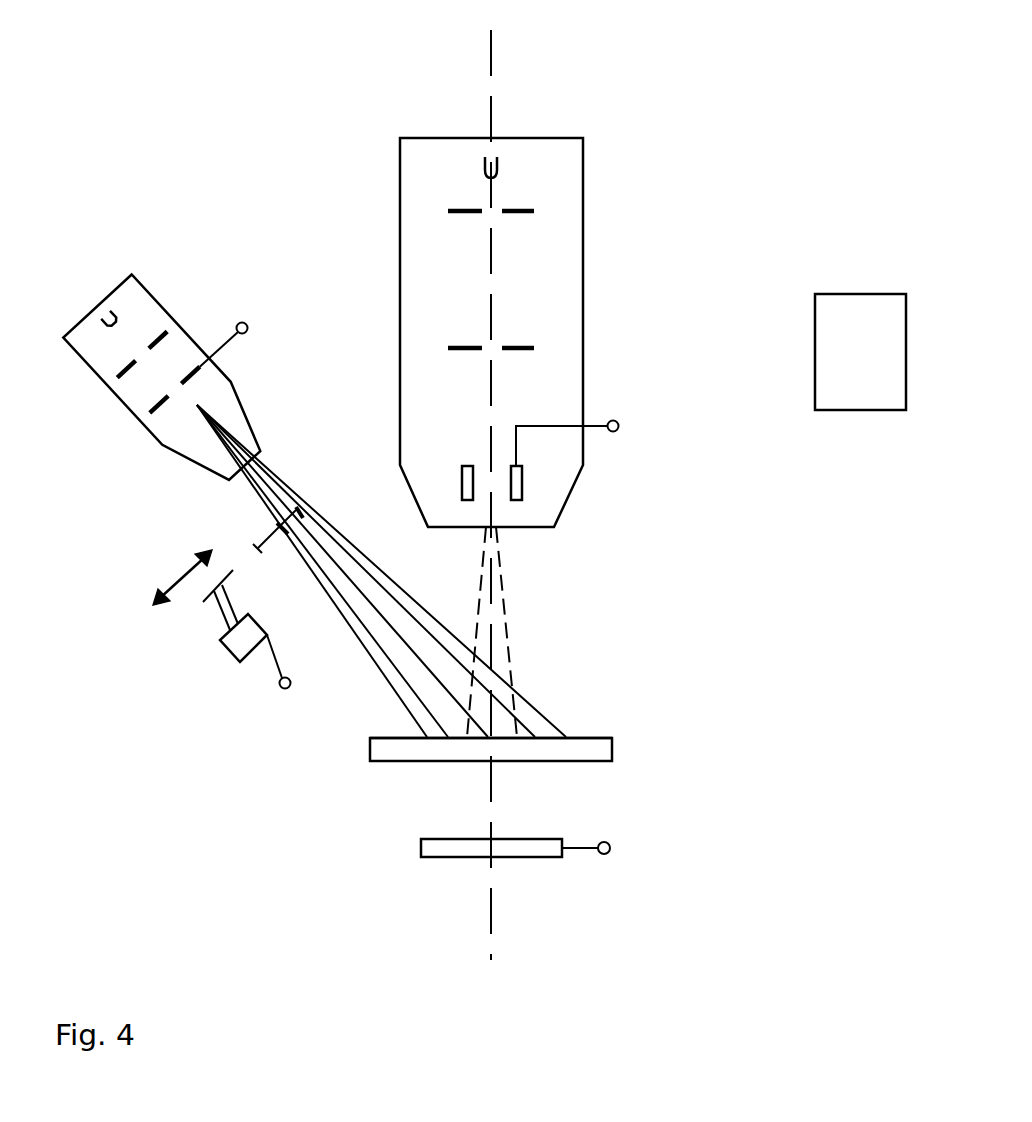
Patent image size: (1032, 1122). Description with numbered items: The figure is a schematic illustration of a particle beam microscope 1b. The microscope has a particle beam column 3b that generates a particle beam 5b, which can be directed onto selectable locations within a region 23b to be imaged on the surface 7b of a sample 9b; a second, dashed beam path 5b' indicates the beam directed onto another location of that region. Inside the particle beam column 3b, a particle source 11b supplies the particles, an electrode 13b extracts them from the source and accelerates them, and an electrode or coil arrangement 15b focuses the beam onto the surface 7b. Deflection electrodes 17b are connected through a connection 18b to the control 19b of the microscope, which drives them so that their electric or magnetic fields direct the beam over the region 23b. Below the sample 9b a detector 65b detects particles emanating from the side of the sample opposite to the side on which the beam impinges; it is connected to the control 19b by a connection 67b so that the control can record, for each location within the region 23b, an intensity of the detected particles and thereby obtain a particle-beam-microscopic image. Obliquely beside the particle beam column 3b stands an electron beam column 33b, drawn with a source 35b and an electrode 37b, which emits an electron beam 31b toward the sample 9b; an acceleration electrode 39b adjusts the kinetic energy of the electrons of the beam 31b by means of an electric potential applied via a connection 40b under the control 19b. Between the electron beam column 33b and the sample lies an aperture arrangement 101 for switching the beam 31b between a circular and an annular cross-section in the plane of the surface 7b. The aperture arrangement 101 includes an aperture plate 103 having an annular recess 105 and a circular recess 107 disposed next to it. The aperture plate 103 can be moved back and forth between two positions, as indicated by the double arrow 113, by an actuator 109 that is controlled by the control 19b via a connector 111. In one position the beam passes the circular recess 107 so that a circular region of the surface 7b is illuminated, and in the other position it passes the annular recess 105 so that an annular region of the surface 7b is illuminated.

The particle beam microscope 1b is at (683, 106).
The particle beam column 3b is at (583, 173).
The particle beam 5b is at (523, 632).
The deflected electron beam 5b' is at (523, 632).
The surface 7b is at (601, 738).
The sample 9b is at (612, 748).
The particle source 11b is at (500, 172).
The electrode 13b is at (462, 215).
The electrode arrangement or coil arrangement 15b is at (462, 351).
The deflection electrodes 17b is at (465, 463).
The connection 18b is at (611, 419).
The control 19b is at (880, 366).
The region to be imaged 23b is at (460, 766).
The electron beam 31b is at (376, 665).
The electron beam column 33b is at (158, 303).
The ion source 35b is at (110, 316).
The aperture / lens 37b is at (128, 378).
The acceleration electrode 39b is at (160, 414).
The connection 40b is at (245, 322).
The detector 65b is at (547, 858).
The connection 67b is at (610, 848).
The aperture arrangement 101 is at (312, 411).
The aperture plate 103 is at (316, 507).
The annular recess 105 is at (310, 502).
The circular recess 107 is at (258, 552).
The actuator 109 is at (228, 654).
The connector 111 is at (278, 690).
The double arrow 113 is at (183, 578).